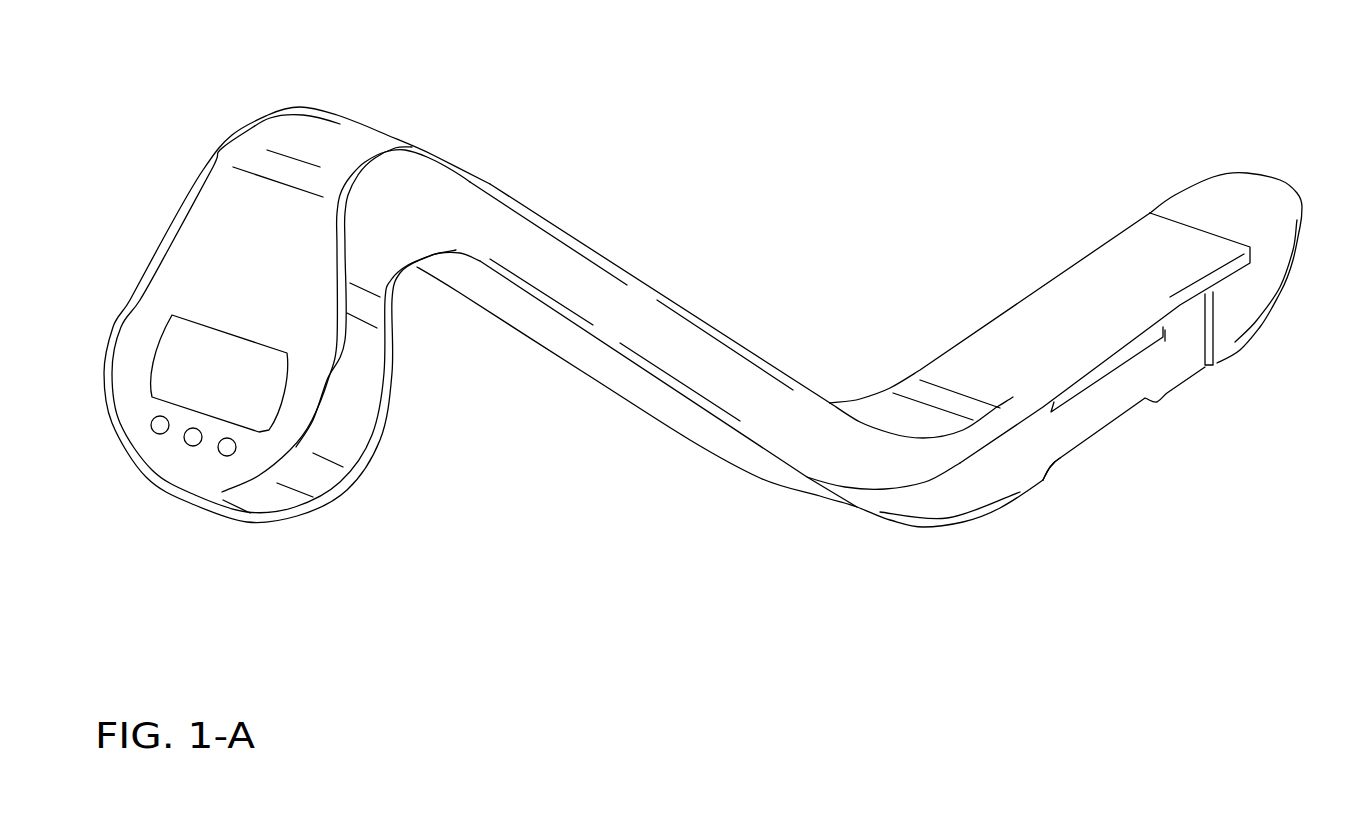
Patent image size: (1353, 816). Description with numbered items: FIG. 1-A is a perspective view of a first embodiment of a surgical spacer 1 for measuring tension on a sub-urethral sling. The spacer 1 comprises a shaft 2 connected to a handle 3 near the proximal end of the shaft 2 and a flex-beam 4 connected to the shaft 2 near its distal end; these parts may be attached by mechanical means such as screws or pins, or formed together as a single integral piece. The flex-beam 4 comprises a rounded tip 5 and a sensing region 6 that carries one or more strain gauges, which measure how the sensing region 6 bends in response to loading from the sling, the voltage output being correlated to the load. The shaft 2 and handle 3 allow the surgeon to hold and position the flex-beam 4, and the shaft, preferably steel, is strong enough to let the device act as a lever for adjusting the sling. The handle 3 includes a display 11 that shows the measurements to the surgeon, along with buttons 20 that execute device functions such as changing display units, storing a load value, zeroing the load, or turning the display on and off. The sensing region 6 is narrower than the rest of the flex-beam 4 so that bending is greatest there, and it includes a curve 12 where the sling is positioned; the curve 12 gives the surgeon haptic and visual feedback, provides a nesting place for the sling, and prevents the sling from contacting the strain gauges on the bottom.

The spacer 1 is at (797, 147).
The shaft 2 is at (653, 292).
The handle 3 is at (162, 233).
The flex-beam 4 is at (1348, 364).
The tip 5 is at (1277, 180).
The sensing region 6 is at (1120, 390).
The display 11 is at (165, 352).
The curve 12 is at (1093, 438).
The buttons 20 is at (159, 434).